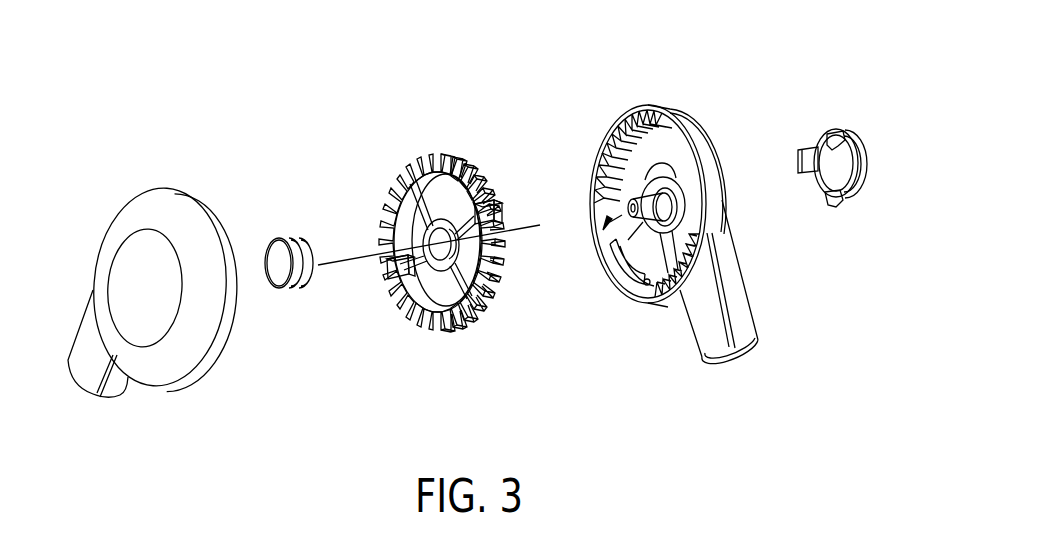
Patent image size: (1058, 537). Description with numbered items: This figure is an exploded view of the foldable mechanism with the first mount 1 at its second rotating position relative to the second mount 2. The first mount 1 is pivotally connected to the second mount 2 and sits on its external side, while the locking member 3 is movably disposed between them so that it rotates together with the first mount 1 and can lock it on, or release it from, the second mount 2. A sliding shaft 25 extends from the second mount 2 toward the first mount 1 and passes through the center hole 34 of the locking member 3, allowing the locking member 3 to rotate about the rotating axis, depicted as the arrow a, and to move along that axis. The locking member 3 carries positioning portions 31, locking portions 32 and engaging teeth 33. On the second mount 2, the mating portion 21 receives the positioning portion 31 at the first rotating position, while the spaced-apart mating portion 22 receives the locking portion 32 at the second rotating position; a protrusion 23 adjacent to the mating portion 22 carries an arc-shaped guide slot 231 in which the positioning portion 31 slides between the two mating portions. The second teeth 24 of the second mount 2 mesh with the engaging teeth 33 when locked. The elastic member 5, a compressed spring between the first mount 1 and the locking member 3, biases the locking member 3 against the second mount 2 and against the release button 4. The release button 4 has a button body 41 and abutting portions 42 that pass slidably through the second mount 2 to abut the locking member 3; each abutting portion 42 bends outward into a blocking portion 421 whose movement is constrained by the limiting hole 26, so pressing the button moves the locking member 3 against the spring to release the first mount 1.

The first mount 1 is at (112, 207).
The elastic member 5 is at (293, 240).
The rotating axis a is at (340, 248).
The locking member 3 is at (427, 150).
The positioning portion 31 is at (500, 207).
The locking portion 32 is at (493, 213).
The engaging teeth 33 is at (400, 288).
The center hole 34 is at (438, 284).
The second mount 2 is at (661, 208).
The mating portion 22 is at (590, 197).
The second teeth 24 is at (610, 137).
The limiting hole 26 is at (658, 160).
The sliding shaft 25 is at (650, 207).
The protrusion 23 is at (657, 307).
The guide slot 231 is at (626, 282).
The mating portion 21 is at (645, 303).
The release button 4 is at (863, 122).
The button body 41 is at (838, 163).
The abutting portion 42 is at (810, 160).
The blocking portion 421 is at (836, 142).